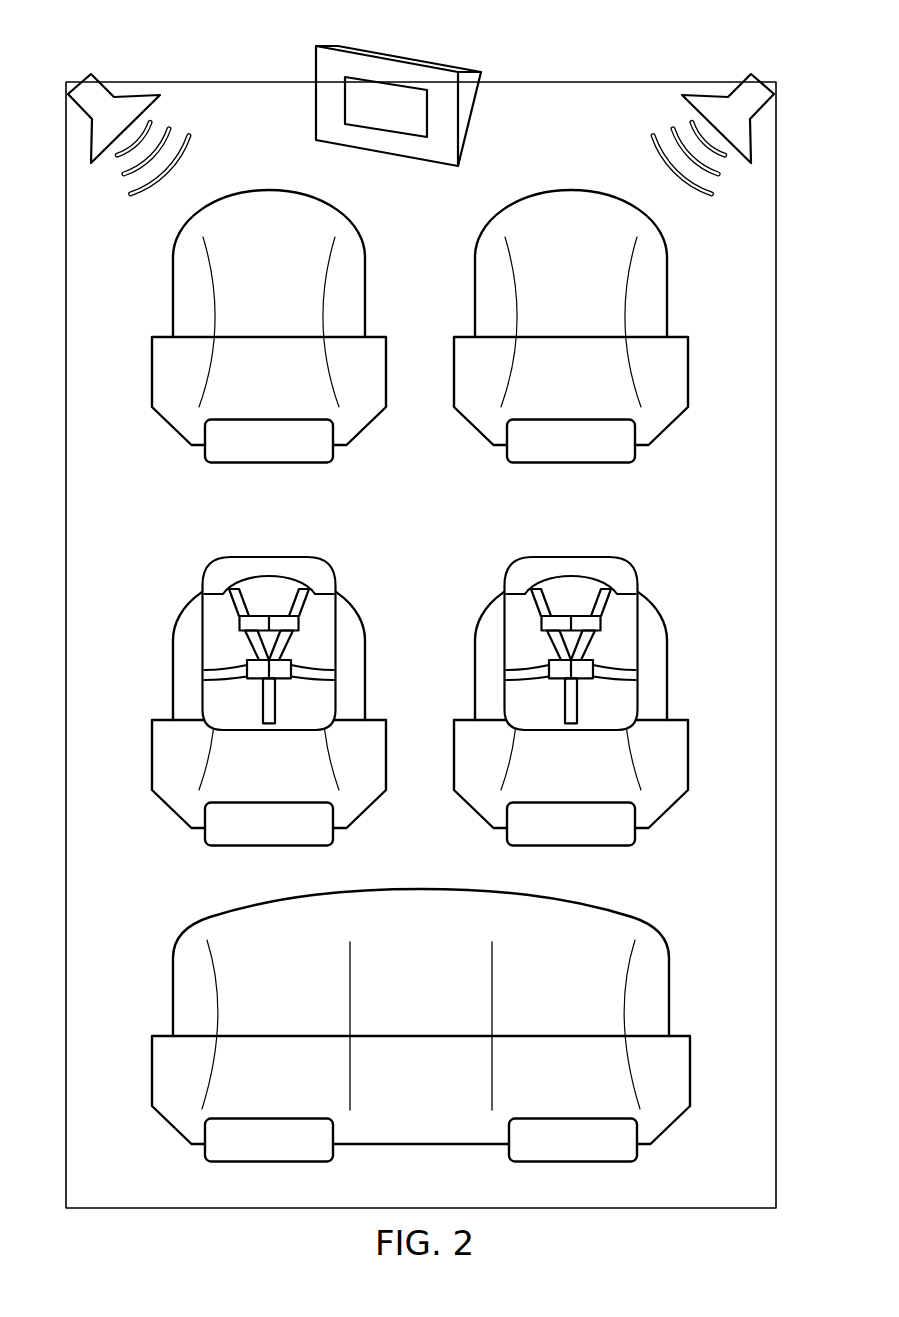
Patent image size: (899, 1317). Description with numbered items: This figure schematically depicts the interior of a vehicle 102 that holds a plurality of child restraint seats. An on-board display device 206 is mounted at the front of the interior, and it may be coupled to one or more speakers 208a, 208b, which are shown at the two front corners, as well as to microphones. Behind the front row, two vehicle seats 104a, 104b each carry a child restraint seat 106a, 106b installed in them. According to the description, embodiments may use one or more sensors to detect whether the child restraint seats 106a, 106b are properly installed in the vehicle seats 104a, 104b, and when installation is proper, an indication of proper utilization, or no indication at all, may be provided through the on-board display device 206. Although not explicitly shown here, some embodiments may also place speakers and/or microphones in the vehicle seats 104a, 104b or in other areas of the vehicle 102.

The vehicle 102 is at (786, 184).
The vehicle seat 104a is at (167, 805).
The vehicle seat 104b is at (675, 804).
The child restraint seat 106a is at (238, 556).
The child restraint seat 106b is at (601, 556).
The on-board display device 206 is at (526, 64).
The speaker 208a is at (88, 75).
The speaker 208b is at (776, 55).